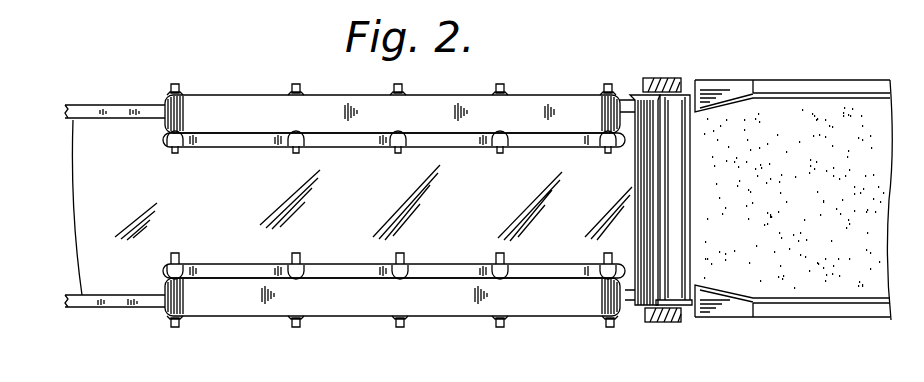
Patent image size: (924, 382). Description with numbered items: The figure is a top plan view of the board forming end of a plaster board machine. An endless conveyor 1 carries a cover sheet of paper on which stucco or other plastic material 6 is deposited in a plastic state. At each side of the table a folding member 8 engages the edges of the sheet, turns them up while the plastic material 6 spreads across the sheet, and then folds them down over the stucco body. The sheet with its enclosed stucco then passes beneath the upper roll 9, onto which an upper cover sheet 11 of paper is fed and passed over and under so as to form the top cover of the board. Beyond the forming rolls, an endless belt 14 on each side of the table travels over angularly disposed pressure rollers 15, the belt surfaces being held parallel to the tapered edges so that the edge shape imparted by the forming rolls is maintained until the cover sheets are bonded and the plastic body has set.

The endless conveyor 1 is at (107, 299).
The plastic material 6 is at (803, 276).
The folding member 8 is at (823, 97).
The upper roll 9 is at (638, 162).
The upper cover sheet 11 is at (674, 268).
The endless belt 14 is at (222, 116).
The pressure rollers 15 is at (509, 269).